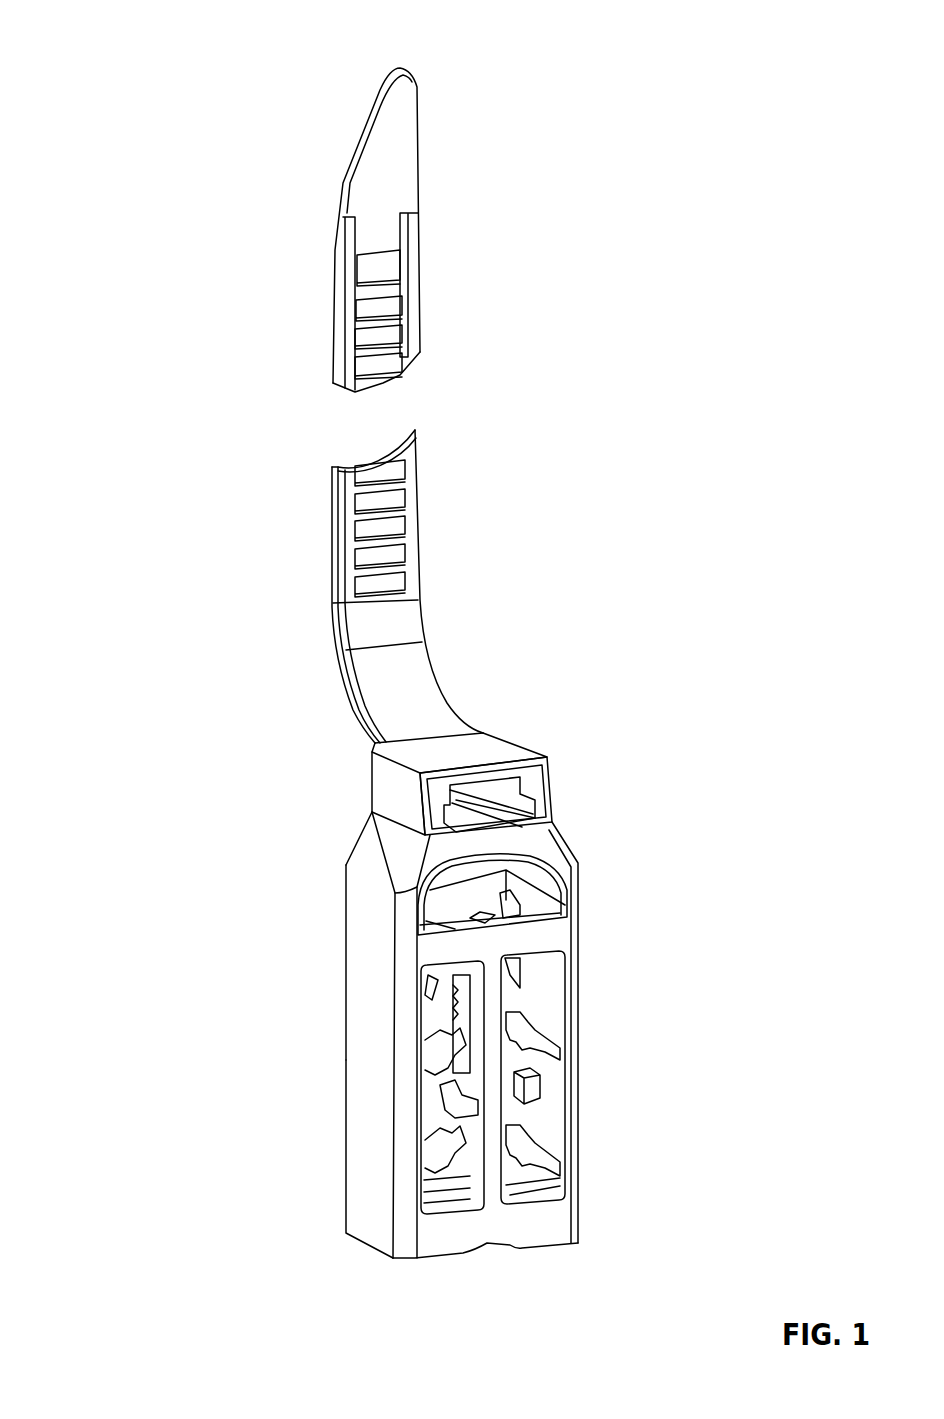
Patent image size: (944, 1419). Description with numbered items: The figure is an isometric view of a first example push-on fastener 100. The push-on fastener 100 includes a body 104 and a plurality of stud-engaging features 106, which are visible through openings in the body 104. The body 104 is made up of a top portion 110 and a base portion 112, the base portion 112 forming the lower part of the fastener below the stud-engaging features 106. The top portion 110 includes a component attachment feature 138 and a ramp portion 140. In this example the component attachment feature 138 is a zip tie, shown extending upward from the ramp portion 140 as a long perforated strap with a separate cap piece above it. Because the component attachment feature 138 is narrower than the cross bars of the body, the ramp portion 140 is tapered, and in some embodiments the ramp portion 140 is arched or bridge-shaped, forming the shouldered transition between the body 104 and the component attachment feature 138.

The push-on fastener 100 is at (122, 38).
The body 104 is at (575, 1035).
The stud-engaging features 106 is at (446, 1040).
The top portion 110 is at (365, 855).
The base portion 112 is at (362, 1210).
The component attachment feature 138 is at (487, 743).
The ramp portion 140 is at (563, 855).